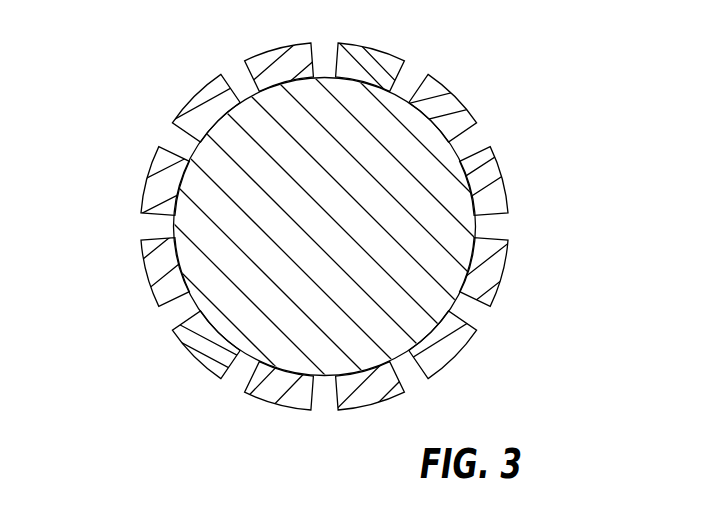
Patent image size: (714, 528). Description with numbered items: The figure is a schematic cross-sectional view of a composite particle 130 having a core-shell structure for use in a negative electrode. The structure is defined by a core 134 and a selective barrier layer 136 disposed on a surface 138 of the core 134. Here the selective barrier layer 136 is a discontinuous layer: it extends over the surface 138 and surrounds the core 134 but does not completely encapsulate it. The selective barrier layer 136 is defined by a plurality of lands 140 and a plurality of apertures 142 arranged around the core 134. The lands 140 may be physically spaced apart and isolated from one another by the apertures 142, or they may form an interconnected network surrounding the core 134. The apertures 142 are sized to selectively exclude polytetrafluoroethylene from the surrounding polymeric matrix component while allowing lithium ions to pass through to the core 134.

The composite particle 130 is at (142, 109).
The core 134 is at (350, 244).
The selective barrier layer 136 is at (508, 262).
The surface 138 is at (175, 231).
The land 140 is at (268, 402).
The aperture 142 is at (179, 296).